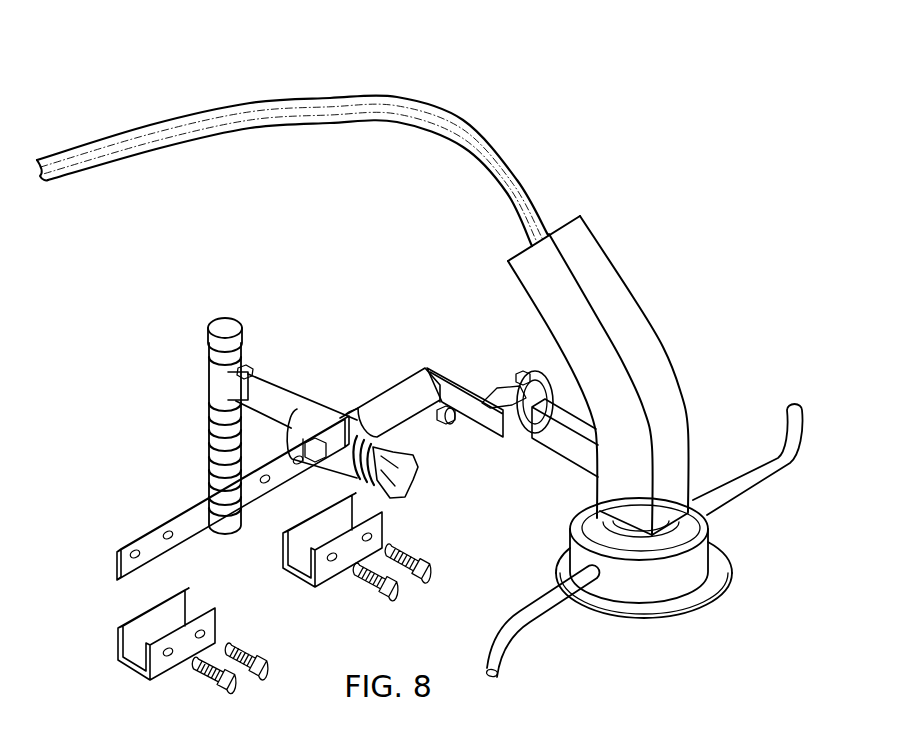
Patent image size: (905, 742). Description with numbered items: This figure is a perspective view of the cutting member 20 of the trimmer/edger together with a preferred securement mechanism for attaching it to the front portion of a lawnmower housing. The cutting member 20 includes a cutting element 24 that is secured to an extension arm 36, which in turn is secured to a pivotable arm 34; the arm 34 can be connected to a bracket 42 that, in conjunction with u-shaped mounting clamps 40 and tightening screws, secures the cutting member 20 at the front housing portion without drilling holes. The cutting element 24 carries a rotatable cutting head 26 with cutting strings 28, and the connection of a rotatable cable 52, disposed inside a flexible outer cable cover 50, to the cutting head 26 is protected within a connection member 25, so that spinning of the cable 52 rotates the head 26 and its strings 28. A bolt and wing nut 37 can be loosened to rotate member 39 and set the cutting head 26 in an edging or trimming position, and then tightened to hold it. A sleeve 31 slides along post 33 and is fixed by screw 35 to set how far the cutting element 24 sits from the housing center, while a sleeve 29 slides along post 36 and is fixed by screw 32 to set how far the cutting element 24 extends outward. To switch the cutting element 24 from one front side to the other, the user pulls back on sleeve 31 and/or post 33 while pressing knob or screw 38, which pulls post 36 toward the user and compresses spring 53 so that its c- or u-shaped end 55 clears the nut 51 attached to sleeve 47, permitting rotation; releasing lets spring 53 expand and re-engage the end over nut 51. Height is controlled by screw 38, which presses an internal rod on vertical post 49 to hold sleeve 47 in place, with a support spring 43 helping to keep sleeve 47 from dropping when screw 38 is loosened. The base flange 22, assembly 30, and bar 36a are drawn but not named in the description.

The cutting member 20 is at (646, 446).
The base flange 22 is at (716, 594).
The cutting element 24 is at (706, 484).
The connection member 25 is at (675, 432).
The rotatable cutting head 26 is at (553, 547).
The cutting strings 28 is at (784, 468).
The sleeve 29 is at (358, 423).
The bracket assembly 30 is at (279, 487).
The sleeve 31 is at (400, 388).
The screw 32 is at (316, 463).
The post 33 is at (350, 416).
The pivotable arm 34 is at (466, 392).
The screw 35 is at (437, 418).
The extension arm 36 is at (270, 382).
The arm bar 36a is at (567, 449).
The bolt/wing nut 37 is at (508, 385).
The screw 38 is at (413, 487).
The member 39 is at (520, 432).
The mounting clamps 40 is at (183, 602).
The bracket 42 is at (183, 517).
The support spring 43 is at (190, 423).
The sleeve 47 is at (212, 375).
The vertical post 49 is at (174, 436).
The flexible outer cable cover 50 is at (292, 170).
The nut 51 is at (246, 370).
The rotatable cable 52 is at (475, 155).
The spring 53 is at (387, 455).
The u-shaped end 55 is at (232, 390).